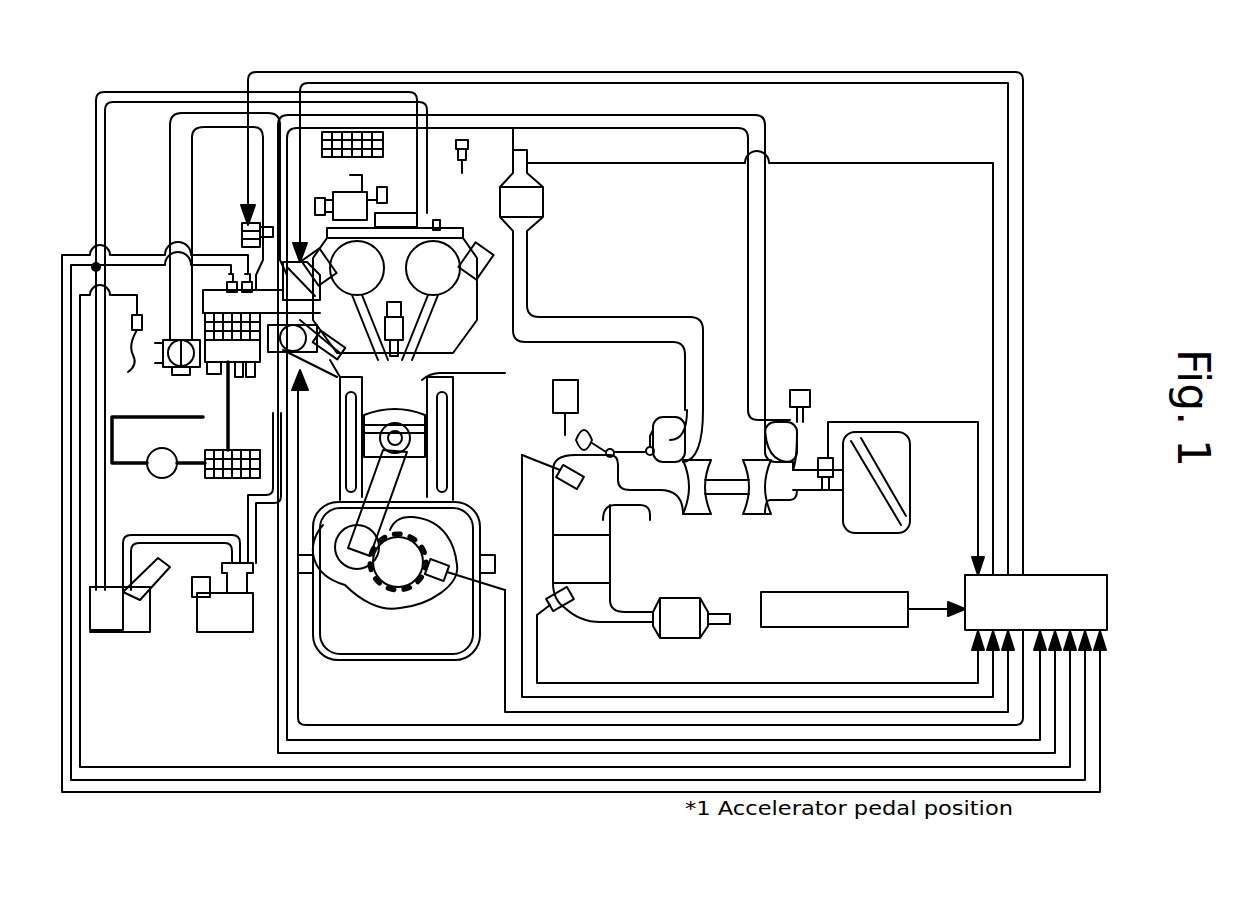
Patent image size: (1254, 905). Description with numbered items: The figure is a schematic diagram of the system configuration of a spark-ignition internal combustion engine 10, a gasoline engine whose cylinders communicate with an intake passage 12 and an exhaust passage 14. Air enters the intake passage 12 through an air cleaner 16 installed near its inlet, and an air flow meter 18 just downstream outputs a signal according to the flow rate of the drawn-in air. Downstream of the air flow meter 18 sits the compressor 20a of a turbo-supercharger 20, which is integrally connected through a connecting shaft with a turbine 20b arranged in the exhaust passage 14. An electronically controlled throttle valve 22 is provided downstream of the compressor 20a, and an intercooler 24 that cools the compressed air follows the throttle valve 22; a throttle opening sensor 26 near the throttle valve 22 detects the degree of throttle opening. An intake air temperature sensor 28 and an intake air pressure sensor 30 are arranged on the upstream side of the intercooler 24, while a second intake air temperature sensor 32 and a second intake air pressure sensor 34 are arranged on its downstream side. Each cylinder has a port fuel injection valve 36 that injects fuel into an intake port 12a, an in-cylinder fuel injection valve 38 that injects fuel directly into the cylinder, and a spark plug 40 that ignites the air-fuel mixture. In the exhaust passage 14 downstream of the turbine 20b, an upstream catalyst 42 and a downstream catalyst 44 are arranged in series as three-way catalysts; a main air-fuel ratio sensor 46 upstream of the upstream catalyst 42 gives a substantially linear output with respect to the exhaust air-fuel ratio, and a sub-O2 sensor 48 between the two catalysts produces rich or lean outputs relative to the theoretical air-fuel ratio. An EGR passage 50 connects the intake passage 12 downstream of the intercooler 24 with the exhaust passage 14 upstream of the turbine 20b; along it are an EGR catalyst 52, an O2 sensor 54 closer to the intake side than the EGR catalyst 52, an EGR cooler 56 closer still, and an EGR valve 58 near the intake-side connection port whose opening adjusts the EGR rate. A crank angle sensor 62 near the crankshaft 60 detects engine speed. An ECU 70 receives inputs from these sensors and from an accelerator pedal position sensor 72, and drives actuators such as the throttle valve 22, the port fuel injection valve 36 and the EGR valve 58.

The internal combustion engine 10 is at (805, 62).
The intake passage 12 is at (766, 312).
The intake port 12a is at (487, 375).
The exhaust passage 14 is at (657, 320).
The air cleaner 16 is at (904, 516).
The air flow meter 18 is at (830, 480).
The turbo-supercharger 20 is at (731, 489).
The compressor 20a is at (762, 503).
The turbine 20b is at (693, 503).
The throttle valve 22 is at (172, 370).
The intercooler 24 is at (205, 325).
The throttle opening sensor 26 is at (124, 349).
The intake air temperature sensor 28 is at (210, 374).
The intake air pressure sensor 30 is at (189, 420).
The intake air temperature sensor 32 is at (242, 278).
The intake air pressure sensor 34 is at (231, 274).
The port fuel injection valve 36 is at (308, 240).
The in-cylinder fuel injection valve 38 is at (328, 365).
The spark plug 40 is at (460, 313).
The upstream catalyst 42 is at (562, 550).
The downstream catalyst 44 is at (676, 636).
The main air-fuel ratio sensor 46 is at (560, 470).
The sub-O2 sensor 48 is at (559, 612).
The EGR passage 50 is at (527, 256).
The EGR catalyst 52 is at (543, 200).
The O2 sensor 54 is at (500, 160).
The EGR cooler 56 is at (370, 160).
The EGR valve 58 is at (262, 222).
The crankshaft 60 is at (412, 558).
The crank angle sensor 62 is at (438, 580).
The ECU 70 is at (1068, 575).
The accelerator pedal position sensor 72 is at (822, 627).